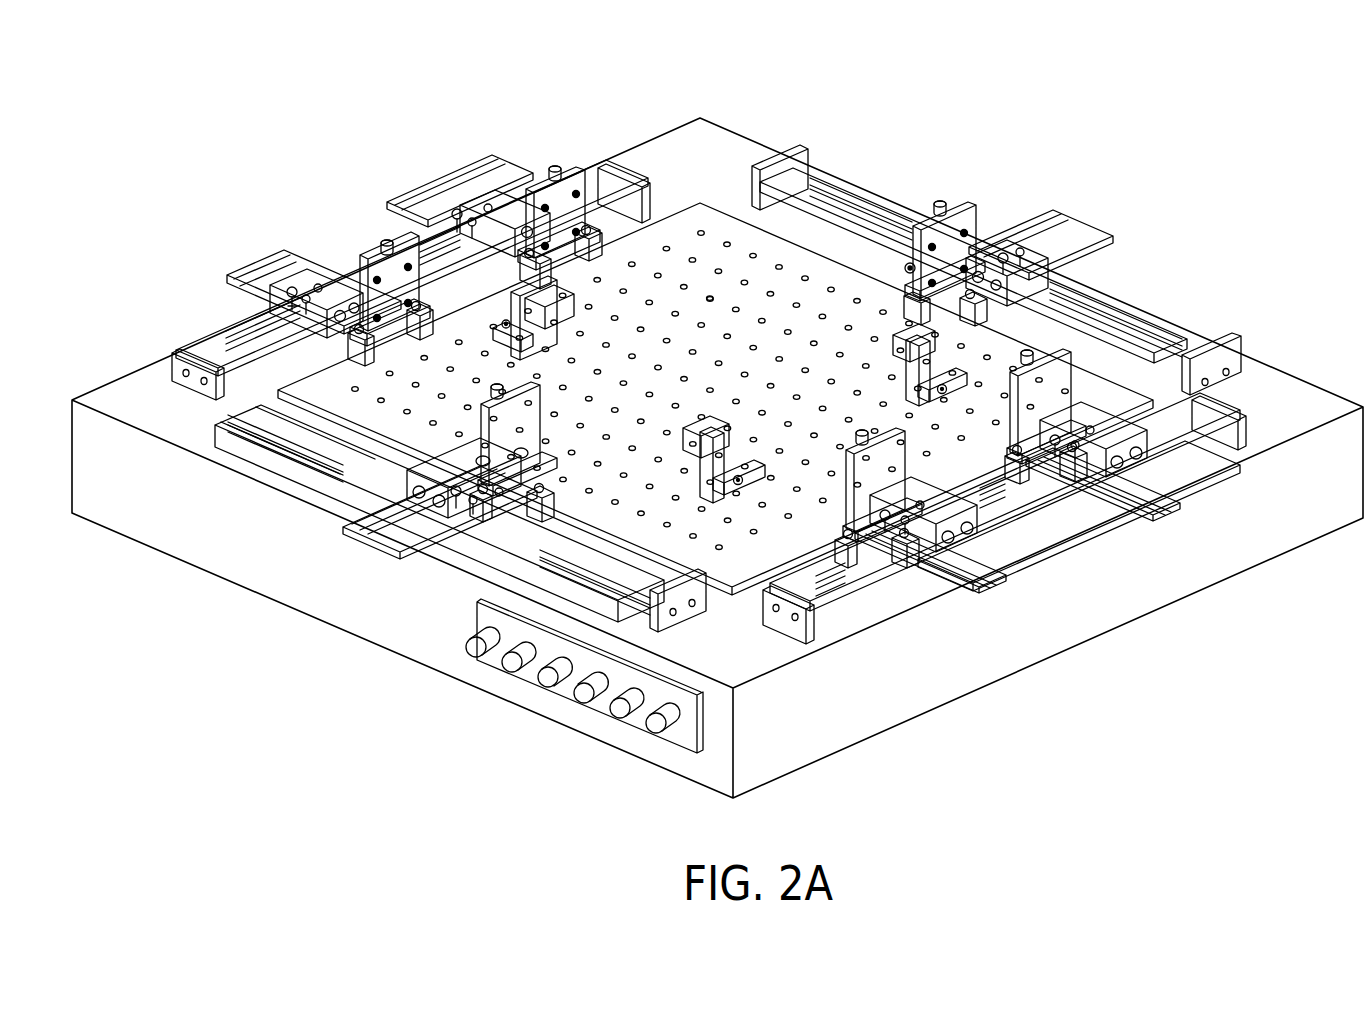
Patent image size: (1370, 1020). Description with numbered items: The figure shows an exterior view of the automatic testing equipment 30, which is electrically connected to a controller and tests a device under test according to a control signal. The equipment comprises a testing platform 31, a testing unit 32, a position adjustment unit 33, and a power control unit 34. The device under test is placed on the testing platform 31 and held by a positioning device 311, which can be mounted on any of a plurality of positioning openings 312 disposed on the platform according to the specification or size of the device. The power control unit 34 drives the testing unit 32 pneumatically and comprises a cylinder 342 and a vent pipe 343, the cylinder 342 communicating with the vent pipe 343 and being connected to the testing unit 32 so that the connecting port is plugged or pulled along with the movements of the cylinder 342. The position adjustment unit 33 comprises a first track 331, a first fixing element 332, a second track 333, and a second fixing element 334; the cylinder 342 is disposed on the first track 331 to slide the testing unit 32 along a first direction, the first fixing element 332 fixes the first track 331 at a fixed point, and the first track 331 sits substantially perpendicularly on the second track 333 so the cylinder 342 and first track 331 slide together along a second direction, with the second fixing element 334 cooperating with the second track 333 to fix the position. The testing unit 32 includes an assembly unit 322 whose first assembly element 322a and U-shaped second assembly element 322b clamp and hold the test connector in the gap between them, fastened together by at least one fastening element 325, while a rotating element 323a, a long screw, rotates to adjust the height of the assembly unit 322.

The automatic testing equipment 30 is at (1222, 160).
The testing platform 31 is at (703, 207).
The positioning device 311 is at (542, 332).
The positioning openings 312 is at (712, 302).
The testing unit 32 is at (370, 241).
The assembly unit 322 is at (1002, 270).
The first assembly element 322a is at (1005, 330).
The second assembly element 322b is at (1035, 342).
The rotating element 323a is at (553, 168).
The fastening element 325 is at (906, 266).
The position adjustment unit 33 is at (460, 515).
The first track 331 is at (439, 532).
The first fixing element 332 is at (518, 517).
The second track 333 is at (335, 460).
The second fixing element 334 is at (370, 490).
The power control unit 34 is at (411, 273).
The cylinder 342 is at (333, 260).
The vent pipe 343 is at (298, 277).